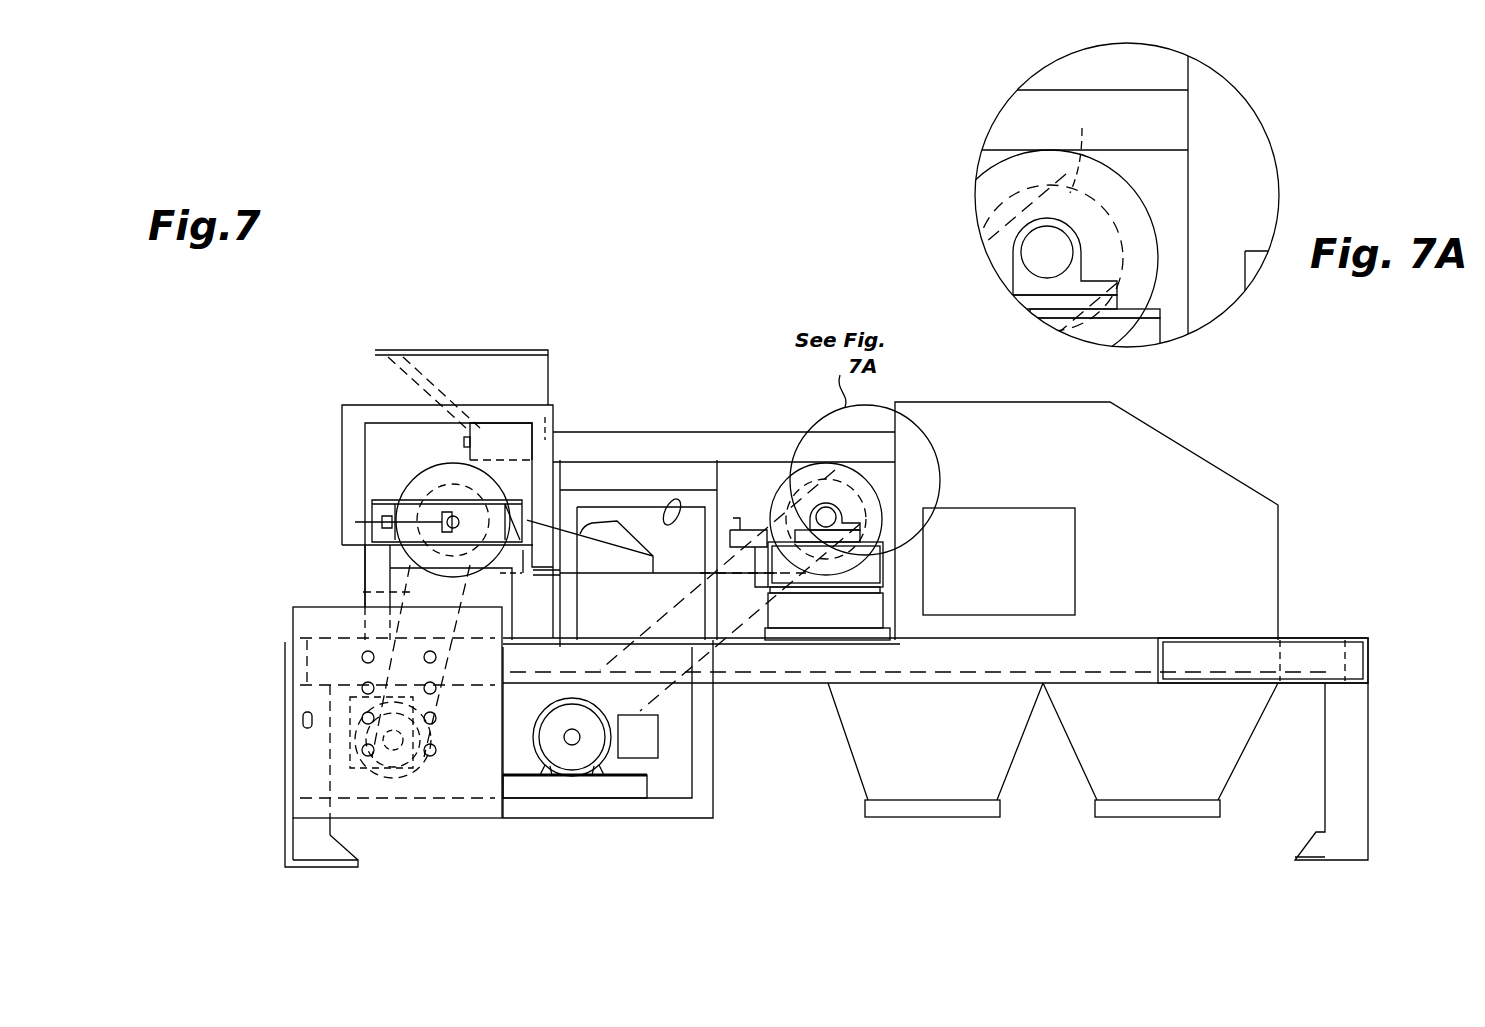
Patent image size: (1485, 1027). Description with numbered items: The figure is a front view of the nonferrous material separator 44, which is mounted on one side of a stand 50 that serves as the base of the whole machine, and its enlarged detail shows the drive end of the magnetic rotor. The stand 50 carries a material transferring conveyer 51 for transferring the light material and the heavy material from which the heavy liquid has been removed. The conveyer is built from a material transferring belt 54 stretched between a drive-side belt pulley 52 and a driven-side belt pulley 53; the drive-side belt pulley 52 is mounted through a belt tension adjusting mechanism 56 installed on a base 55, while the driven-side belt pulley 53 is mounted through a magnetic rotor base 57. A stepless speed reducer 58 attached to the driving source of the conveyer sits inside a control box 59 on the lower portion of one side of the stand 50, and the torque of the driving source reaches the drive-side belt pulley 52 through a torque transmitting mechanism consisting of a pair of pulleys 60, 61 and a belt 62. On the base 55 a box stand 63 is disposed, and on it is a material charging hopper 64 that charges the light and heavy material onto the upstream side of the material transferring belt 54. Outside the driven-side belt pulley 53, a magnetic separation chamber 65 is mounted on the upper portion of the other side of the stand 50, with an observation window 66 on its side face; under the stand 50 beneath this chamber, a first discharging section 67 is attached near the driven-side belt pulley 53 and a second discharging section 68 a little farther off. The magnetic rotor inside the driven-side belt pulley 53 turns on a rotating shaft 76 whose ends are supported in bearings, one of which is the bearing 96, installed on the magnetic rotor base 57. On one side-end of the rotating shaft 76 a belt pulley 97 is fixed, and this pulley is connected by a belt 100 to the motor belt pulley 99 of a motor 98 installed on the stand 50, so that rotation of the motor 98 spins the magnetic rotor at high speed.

In FIG. 7, the nonferrous material separator 44 is at (560, 246).
In FIG. 7, the stand 50 is at (1310, 650).
In FIG. 7, the material transferring conveyer 51 is at (634, 441).
In FIG. 7, the drive-side belt pulley 52 is at (425, 485).
In FIG. 7, the driven-side belt pulley 53 is at (777, 487).
In FIG. 7A, the driven-side belt pulley 53 is at (997, 180).
In FIG. 7, the material transferring belt 54 is at (700, 462).
In FIG. 7, the base 55 is at (373, 567).
In FIG. 7, the belt tension adjusting mechanism 56 is at (447, 512).
In FIG. 7, the magnetic rotor base 57 is at (850, 578).
In FIG. 7, the stepless speed reducer 58 is at (372, 757).
In FIG. 7, the control box 59 is at (335, 783).
In FIG. 7, the pulley 60 is at (520, 500).
In FIG. 7, the pulley 61 is at (424, 757).
In FIG. 7, the belt 62 is at (358, 590).
In FIG. 7, the box stand 63 is at (383, 413).
In FIG. 7, the material charging hopper 64 is at (498, 348).
In FIG. 7, the magnetic separation chamber 65 is at (1162, 430).
In FIG. 7, the observation window 66 is at (1075, 512).
In FIG. 7, the first discharging section 67 is at (932, 818).
In FIG. 7, the second discharging section 68 is at (1140, 818).
In FIG. 7A, the rotating shaft 76 is at (1027, 250).
In FIG. 7A, the bearing 96 is at (1022, 295).
In FIG. 7A, the belt pulley 97 is at (1086, 148).
In FIG. 7, the motor 98 is at (527, 745).
In FIG. 7, the motor belt pulley 99 is at (560, 777).
In FIG. 7, the belt 100 is at (693, 710).